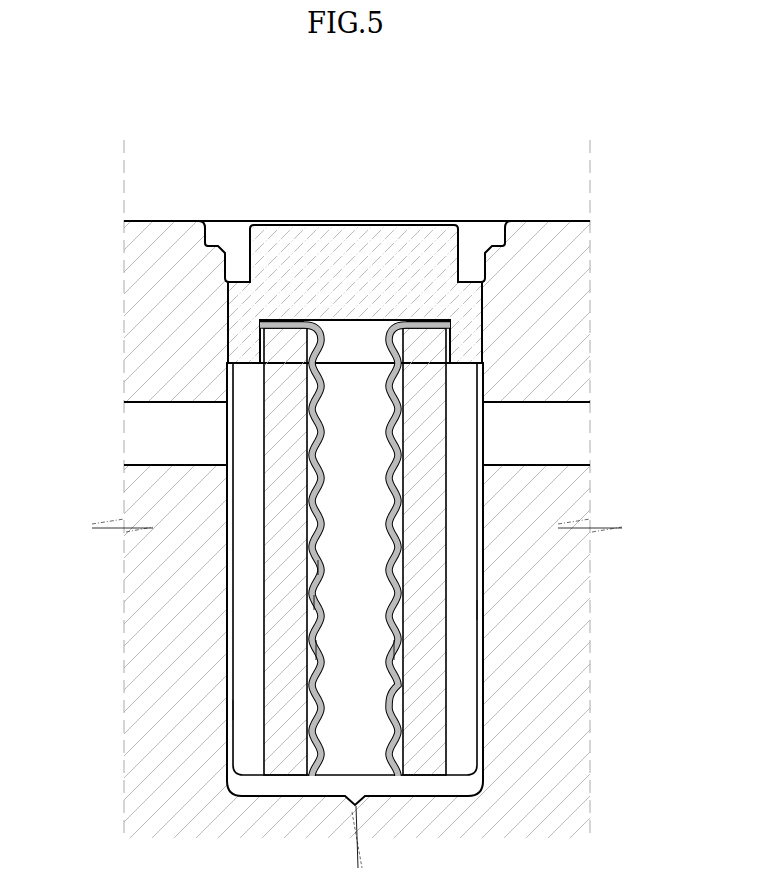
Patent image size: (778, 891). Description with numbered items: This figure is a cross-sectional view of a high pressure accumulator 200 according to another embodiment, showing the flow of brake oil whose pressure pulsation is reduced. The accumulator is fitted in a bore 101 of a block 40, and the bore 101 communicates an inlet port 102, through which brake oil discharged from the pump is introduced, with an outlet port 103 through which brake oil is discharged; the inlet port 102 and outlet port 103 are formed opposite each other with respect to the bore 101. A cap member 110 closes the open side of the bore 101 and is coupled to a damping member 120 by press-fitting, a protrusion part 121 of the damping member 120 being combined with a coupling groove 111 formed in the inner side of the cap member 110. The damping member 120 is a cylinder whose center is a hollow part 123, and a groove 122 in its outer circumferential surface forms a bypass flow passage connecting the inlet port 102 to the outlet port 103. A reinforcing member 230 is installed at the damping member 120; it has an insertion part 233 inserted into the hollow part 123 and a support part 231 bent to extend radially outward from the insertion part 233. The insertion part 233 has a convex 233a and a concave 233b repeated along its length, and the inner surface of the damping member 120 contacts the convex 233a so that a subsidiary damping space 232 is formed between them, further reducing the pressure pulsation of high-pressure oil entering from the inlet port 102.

The base body 40 is at (143, 262).
The high pressure accumulator 200 is at (280, 217).
The cap member 110 is at (325, 236).
The coupling groove 111 is at (276, 341).
The protrusion part 121 is at (438, 339).
The damping member 120 is at (452, 676).
The groove 122 is at (244, 706).
The bore 101 is at (471, 602).
The inlet port 102 is at (146, 438).
The outlet port 103 is at (565, 441).
The hollow part 123 is at (371, 441).
The reinforcing member 230 is at (406, 494).
The support part 231 is at (424, 320).
The subsidiary damping space 232 is at (309, 658).
The insertion part 233 is at (171, 592).
The convex 233a is at (318, 572).
The concave 233b is at (318, 603).